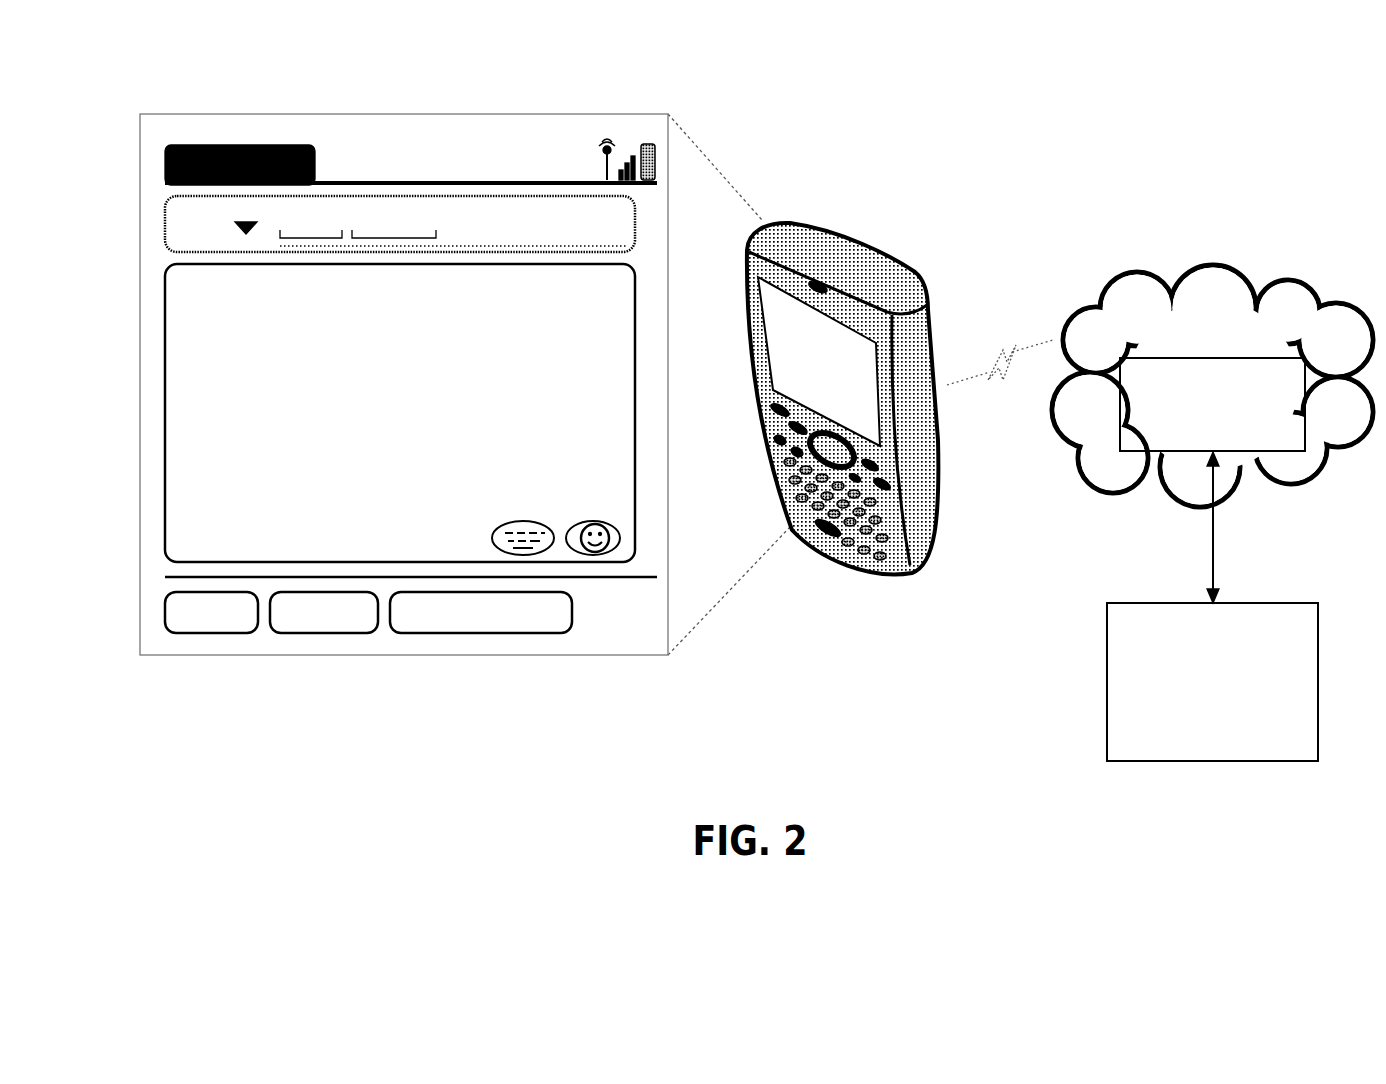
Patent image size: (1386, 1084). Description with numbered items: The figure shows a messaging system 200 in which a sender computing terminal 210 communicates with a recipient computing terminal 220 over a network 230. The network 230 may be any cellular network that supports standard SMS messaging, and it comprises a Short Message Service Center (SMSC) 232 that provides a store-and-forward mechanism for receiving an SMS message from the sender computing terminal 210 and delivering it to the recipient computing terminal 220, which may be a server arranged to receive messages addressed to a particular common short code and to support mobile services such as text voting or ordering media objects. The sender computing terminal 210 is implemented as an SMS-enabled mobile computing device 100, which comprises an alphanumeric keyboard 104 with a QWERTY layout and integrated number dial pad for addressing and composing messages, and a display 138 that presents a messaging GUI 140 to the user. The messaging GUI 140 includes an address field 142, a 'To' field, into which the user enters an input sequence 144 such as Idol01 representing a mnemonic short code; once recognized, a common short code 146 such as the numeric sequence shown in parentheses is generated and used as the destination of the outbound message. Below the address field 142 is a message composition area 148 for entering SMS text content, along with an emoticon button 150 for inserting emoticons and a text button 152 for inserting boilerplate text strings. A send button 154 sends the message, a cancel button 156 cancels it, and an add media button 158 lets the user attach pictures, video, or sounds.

The messaging system 200 is at (723, 36).
The mobile computing device 100 is at (882, 258).
The alphanumeric keyboard 104 is at (777, 523).
The display 138 is at (765, 351).
The messaging GUI 140 is at (403, 114).
The address field 142 is at (163, 219).
The input sequence 144 is at (311, 237).
The common short code 146 is at (393, 237).
The message composition area 148 is at (163, 390).
The emoticon button 150 is at (592, 520).
The text button 152 is at (527, 520).
The send button 154 is at (163, 603).
The cancel button 156 is at (315, 633).
The add media button 158 is at (472, 633).
The sender computing terminal 210 is at (64, 630).
The recipient computing terminal 220 is at (1212, 682).
The network 230 is at (1213, 265).
The Short Message Service Center (SMSC) 232 is at (1212, 404).